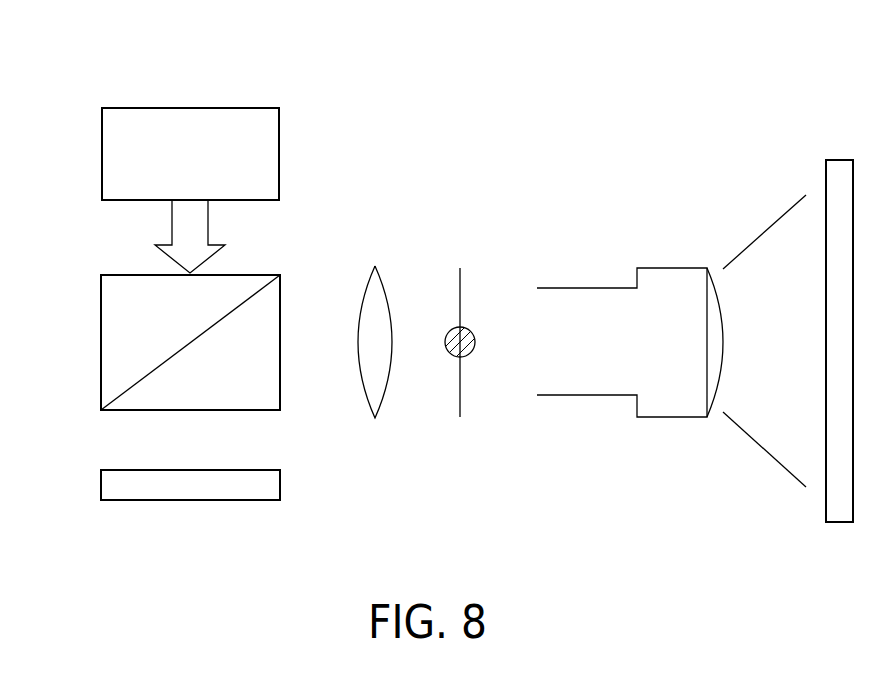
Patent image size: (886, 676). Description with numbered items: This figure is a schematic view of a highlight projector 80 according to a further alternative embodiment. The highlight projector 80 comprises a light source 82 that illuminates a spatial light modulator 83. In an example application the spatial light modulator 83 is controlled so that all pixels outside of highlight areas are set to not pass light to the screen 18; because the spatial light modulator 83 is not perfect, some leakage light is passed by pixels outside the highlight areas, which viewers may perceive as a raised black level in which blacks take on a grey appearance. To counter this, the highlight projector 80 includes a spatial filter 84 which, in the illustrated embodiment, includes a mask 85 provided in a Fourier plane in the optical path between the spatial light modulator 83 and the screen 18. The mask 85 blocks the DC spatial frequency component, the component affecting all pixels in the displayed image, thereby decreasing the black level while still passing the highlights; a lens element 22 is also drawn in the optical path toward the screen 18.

The highlight projector 80 is at (84, 56).
The light source 82 is at (280, 153).
The spatial light modulator 83 is at (100, 482).
The spatial filter 84 is at (460, 457).
The mask 85 is at (460, 268).
The projection lens 22 is at (670, 267).
The screen 18 is at (836, 158).